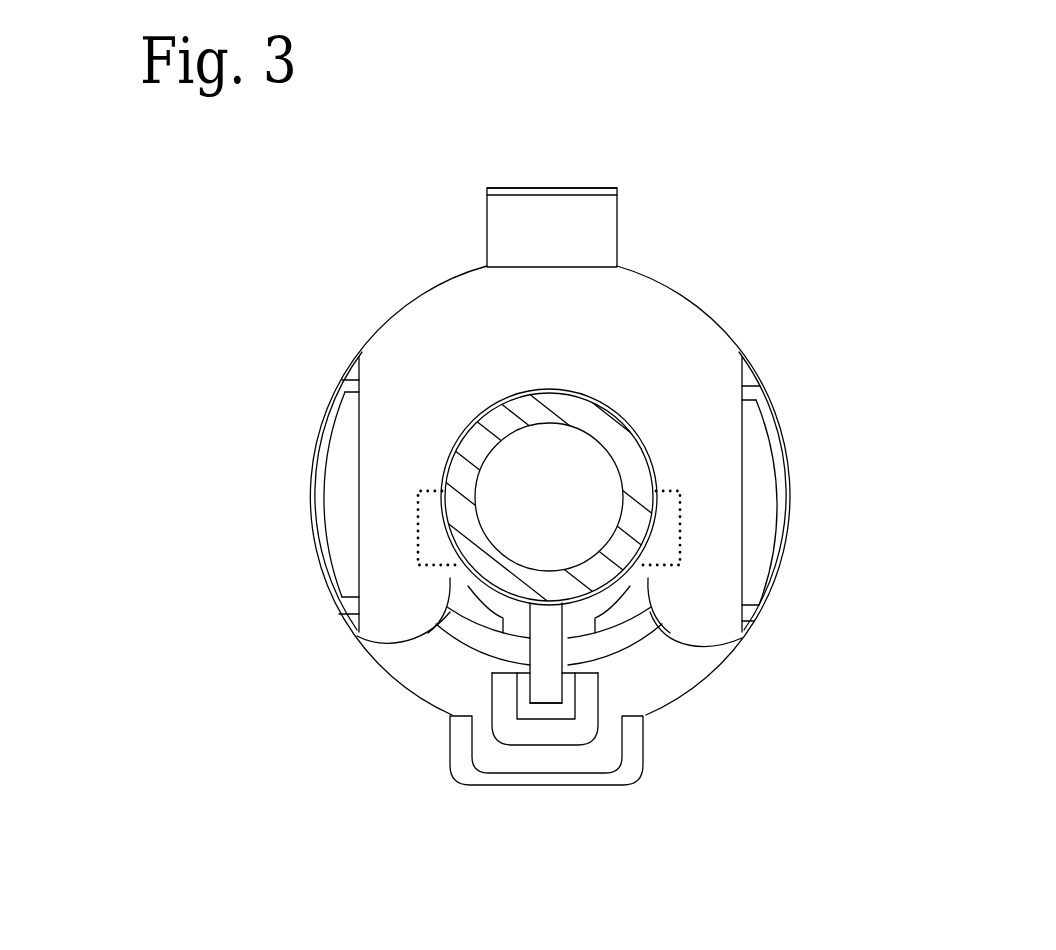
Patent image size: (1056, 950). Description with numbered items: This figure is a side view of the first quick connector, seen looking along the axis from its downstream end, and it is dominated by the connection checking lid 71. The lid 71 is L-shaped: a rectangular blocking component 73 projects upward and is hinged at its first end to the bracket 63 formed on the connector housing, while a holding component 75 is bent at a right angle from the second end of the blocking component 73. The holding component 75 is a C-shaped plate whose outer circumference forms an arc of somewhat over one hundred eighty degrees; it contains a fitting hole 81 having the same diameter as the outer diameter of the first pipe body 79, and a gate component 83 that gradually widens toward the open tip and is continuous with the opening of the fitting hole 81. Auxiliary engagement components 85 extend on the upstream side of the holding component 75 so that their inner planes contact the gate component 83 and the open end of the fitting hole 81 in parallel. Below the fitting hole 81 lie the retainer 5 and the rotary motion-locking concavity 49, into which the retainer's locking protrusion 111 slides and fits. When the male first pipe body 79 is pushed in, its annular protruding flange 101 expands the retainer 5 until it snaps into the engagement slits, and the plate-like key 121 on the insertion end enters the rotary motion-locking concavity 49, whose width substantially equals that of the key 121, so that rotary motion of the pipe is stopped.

The connection checking lid 71 is at (418, 280).
The holding component 75 is at (465, 360).
The gate component 83 is at (377, 661).
The blocking component 73 is at (543, 250).
The bracket 63 is at (542, 185).
The fitting hole 81 is at (655, 473).
The first pipe body 79 is at (545, 408).
The auxiliary engagement component 85 is at (418, 530).
The retainer 5 is at (477, 632).
The rotary motion-locking concavity 49 is at (507, 723).
The annular protruding flange 101 is at (593, 603).
The locking protrusion 111 is at (565, 720).
The key 121 is at (539, 685).